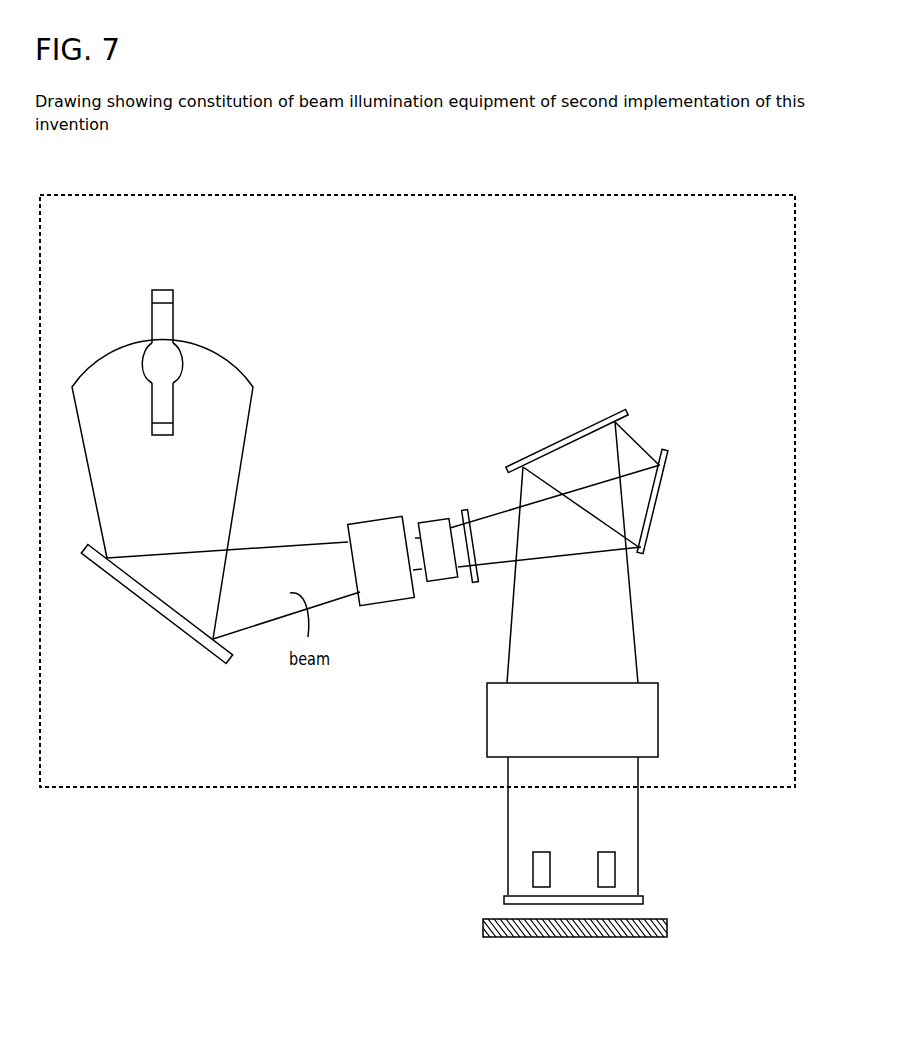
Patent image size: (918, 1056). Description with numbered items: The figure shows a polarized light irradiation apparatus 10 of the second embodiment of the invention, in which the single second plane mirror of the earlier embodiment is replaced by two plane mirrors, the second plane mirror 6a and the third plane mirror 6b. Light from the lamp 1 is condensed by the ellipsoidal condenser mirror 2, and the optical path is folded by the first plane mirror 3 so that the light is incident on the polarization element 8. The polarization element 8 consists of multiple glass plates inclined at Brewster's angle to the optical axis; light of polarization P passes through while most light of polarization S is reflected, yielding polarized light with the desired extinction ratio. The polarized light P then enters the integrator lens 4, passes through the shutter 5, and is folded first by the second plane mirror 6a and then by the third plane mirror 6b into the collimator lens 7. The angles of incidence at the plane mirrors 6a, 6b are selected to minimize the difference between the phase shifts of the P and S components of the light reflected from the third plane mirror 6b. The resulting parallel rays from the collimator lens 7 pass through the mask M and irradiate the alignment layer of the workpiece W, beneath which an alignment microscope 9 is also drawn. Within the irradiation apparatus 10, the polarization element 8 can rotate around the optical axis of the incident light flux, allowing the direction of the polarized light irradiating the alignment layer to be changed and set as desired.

The lamp 1 is at (174, 320).
The ellipsoidal condenser mirror 2 is at (243, 367).
The first plane mirror 3 is at (158, 617).
The integrator lens 4 is at (432, 518).
The shutter 5 is at (468, 510).
The second plane mirror 6a is at (652, 527).
The third plane mirror 6b is at (560, 443).
The collimator lens 7 is at (660, 710).
The polarization element 8 is at (397, 603).
The alignment microscope 9 is at (615, 863).
The irradiation apparatus 10 is at (138, 788).
The mask M is at (643, 900).
The workpiece W is at (667, 930).